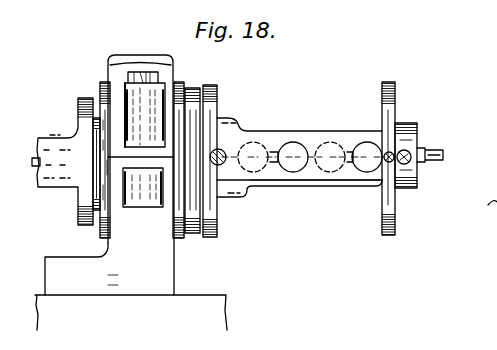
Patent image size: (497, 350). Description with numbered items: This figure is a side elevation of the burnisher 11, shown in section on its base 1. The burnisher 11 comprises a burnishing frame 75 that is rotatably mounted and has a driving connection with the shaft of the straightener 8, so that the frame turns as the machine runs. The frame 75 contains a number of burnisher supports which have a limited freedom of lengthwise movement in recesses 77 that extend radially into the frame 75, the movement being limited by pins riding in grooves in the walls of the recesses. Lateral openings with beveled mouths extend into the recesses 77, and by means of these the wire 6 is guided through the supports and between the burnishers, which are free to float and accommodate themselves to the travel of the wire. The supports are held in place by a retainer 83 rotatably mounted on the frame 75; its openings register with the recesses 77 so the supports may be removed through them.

The base frame 1 is at (203, 300).
The wire 6 is at (431, 154).
The straightener 8 is at (57, 143).
The burnisher 11 is at (297, 149).
The burnishing frame 75 is at (290, 152).
The recesses 77 is at (336, 142).
The retainer 83 is at (270, 181).